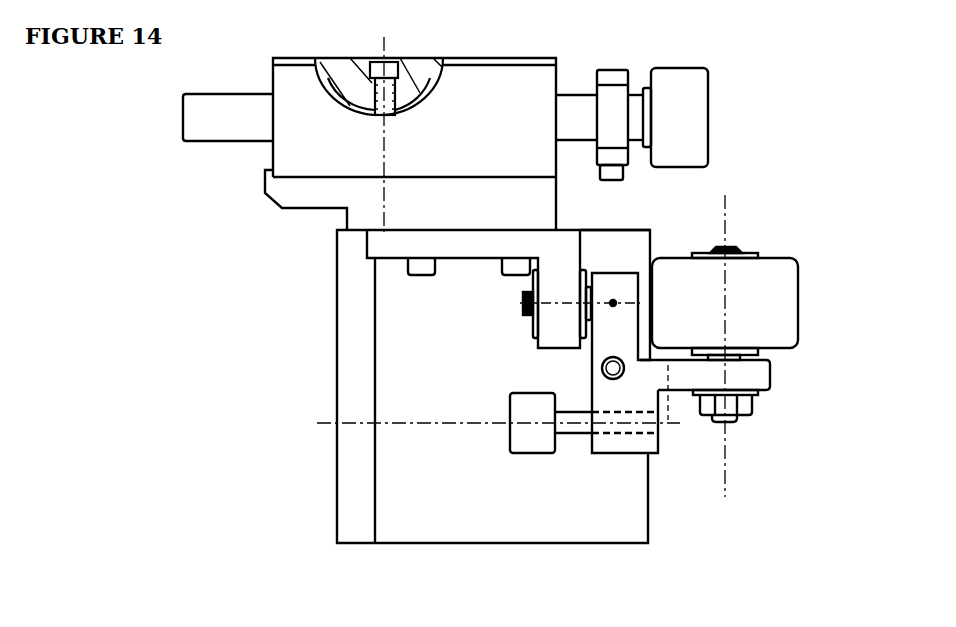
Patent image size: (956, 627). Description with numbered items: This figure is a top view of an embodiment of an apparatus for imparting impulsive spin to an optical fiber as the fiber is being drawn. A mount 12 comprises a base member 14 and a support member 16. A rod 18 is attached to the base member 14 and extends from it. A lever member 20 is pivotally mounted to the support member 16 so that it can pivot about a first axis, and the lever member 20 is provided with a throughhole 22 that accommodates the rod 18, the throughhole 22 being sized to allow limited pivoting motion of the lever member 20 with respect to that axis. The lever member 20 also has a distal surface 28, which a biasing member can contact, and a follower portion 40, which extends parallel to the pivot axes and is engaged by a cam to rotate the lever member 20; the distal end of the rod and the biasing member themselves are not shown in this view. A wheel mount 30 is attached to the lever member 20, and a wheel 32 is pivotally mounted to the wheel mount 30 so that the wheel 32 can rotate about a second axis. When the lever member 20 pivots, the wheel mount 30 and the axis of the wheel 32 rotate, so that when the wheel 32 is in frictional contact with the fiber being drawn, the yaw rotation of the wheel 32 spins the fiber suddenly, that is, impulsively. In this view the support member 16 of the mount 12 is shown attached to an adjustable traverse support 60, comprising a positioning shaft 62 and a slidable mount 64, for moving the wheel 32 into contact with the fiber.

The mount 12 is at (149, 279).
The base member 14 is at (580, 515).
The support member 16 is at (395, 300).
The rod 18 is at (621, 376).
The lever member 20 is at (613, 255).
The throughhole 22 is at (617, 357).
The distal surface 28 is at (608, 390).
The wheel mount 30 is at (753, 373).
The wheel 32 is at (787, 293).
The follower portion 40 is at (528, 440).
The adjustable traverse support 60 is at (303, 92).
The positioning shaft 62 is at (577, 116).
The slidable mount 64 is at (513, 98).